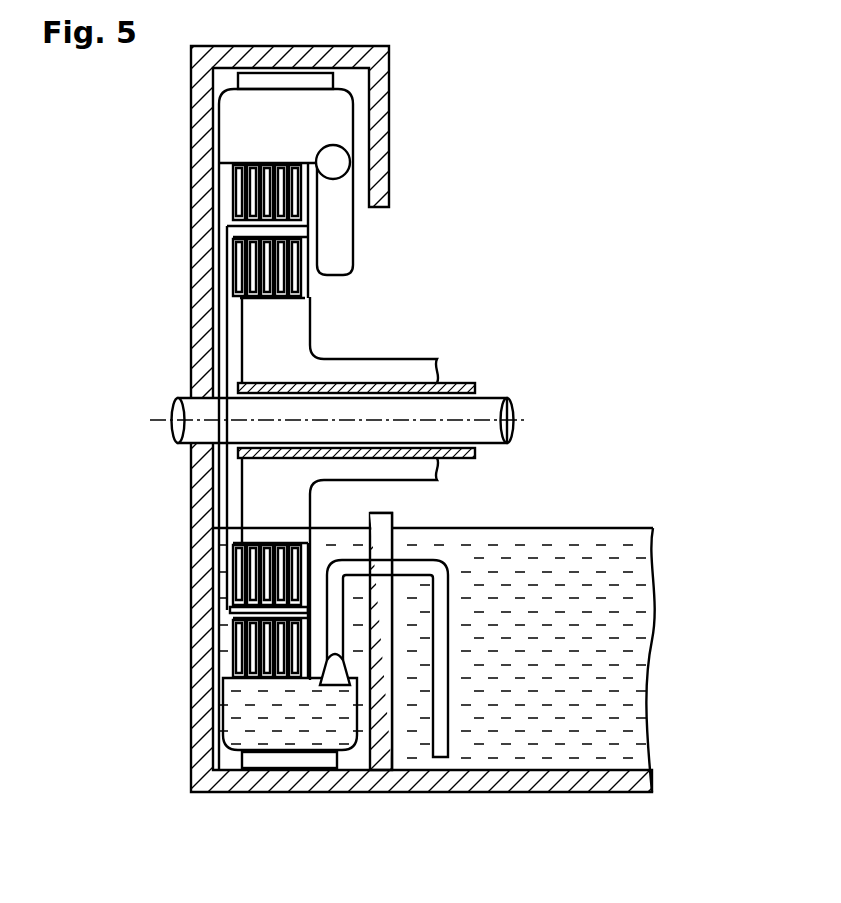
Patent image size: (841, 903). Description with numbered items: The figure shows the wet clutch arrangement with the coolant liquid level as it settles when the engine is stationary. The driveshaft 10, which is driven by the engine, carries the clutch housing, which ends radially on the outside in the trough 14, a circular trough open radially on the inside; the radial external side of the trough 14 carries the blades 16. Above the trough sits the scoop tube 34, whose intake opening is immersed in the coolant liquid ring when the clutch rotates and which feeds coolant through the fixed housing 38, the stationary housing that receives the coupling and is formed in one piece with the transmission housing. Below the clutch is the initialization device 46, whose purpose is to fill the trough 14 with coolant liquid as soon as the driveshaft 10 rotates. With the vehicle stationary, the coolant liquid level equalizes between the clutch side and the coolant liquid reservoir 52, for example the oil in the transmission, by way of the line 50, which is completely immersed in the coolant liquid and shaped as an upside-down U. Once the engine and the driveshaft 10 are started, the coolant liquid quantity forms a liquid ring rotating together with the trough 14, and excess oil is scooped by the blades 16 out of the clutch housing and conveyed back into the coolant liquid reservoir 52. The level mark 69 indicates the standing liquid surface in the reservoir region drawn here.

The driveshaft 10 is at (188, 432).
The trough 14 is at (353, 146).
The blades 16 is at (330, 79).
The scoop tube 34 is at (338, 241).
The fixed housing 38 is at (200, 204).
The initialization device 46 is at (335, 675).
The line 50 is at (442, 718).
The coolant liquid reservoir 52 is at (600, 622).
The liquid level 69 is at (570, 528).